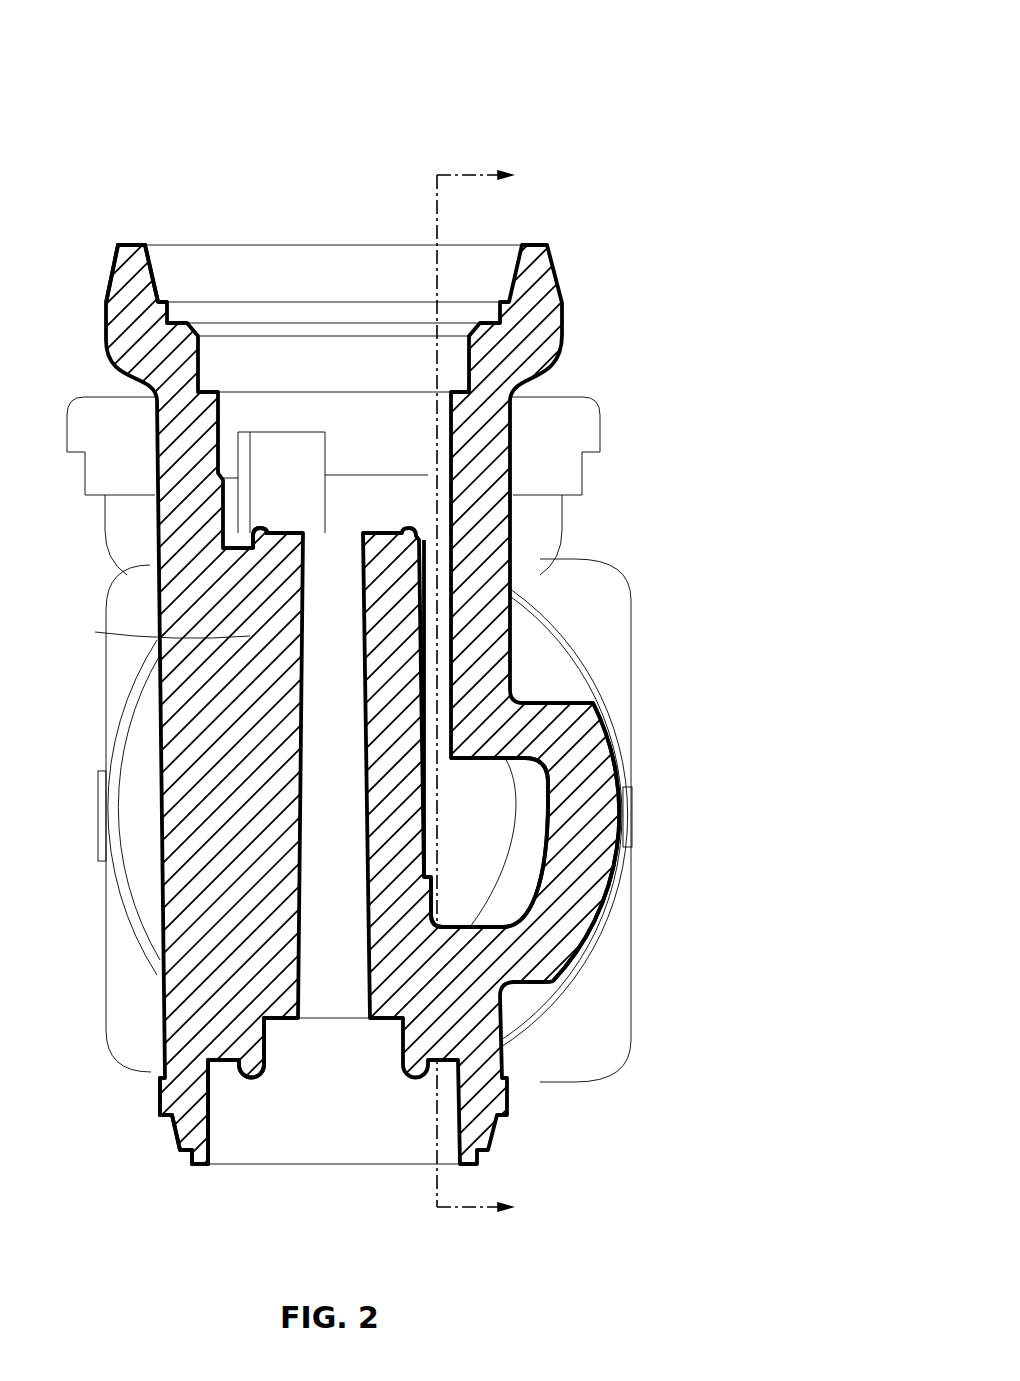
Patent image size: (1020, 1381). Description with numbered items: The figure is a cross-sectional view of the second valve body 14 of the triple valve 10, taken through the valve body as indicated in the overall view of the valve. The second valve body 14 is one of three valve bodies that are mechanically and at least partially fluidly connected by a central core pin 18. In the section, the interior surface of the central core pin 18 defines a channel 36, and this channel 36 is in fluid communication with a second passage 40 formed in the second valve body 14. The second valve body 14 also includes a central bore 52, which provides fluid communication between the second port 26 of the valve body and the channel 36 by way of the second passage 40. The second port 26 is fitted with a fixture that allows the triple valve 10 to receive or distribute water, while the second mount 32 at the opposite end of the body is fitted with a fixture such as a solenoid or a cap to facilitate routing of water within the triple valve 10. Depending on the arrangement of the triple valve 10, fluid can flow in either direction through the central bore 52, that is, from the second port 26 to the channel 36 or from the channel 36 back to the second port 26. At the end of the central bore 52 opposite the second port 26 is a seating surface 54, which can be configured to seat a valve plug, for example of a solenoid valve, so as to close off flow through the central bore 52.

The triple valve 10 is at (510, 690).
The second valve body 14 is at (498, 535).
The central core pin 18 is at (576, 824).
The second port 26 is at (224, 1192).
The second mount 32 is at (133, 257).
The channel 36 is at (524, 868).
The second passage 40 is at (458, 642).
The central bore 52 is at (304, 656).
The seating surface 54 is at (290, 512).